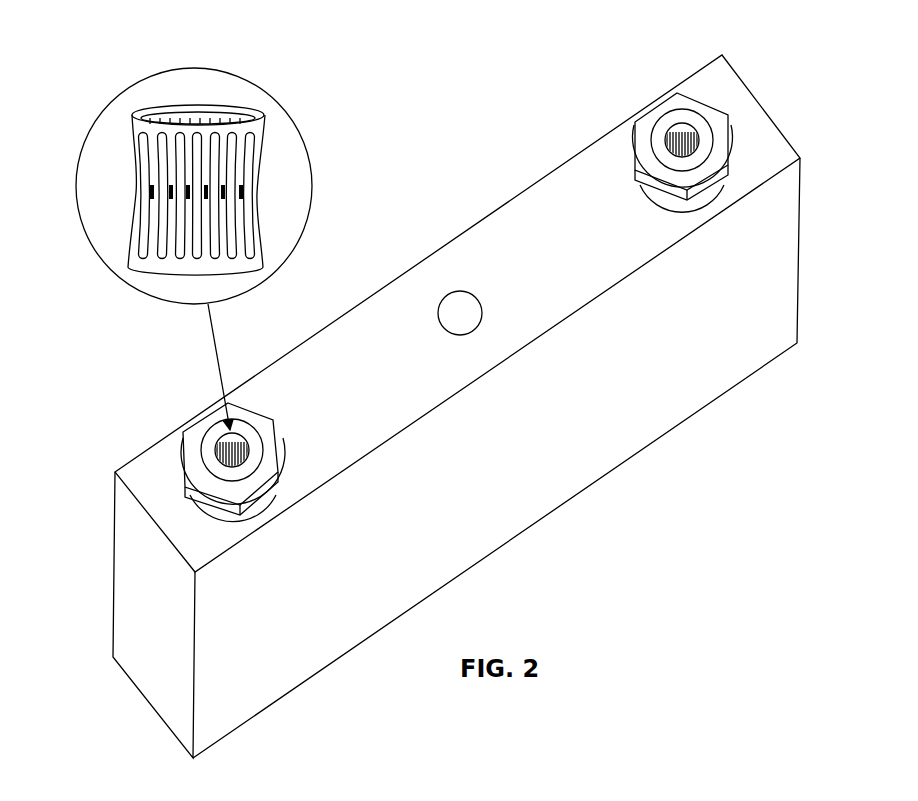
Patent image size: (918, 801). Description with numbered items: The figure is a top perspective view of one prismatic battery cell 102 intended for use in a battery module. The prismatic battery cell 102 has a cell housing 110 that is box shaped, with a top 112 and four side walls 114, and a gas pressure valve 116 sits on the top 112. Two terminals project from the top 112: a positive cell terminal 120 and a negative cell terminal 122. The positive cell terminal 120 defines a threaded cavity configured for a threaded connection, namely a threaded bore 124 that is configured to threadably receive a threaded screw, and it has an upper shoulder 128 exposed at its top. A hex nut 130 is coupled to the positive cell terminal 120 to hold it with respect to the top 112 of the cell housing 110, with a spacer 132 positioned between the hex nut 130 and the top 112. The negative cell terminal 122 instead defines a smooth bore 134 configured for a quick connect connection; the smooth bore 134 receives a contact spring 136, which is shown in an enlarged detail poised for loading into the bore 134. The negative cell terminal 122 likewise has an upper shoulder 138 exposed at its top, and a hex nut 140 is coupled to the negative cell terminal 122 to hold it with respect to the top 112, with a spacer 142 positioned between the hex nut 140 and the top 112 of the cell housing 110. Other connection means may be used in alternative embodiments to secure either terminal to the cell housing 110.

The prismatic battery cell 102 is at (396, 155).
The cell housing 110 is at (593, 466).
The top 112 is at (567, 180).
The side walls 114 is at (316, 657).
The gas pressure valve 116 is at (458, 312).
The positive cell terminal 120 is at (663, 116).
The negative cell terminal 122 is at (212, 428).
The threaded bore 124 is at (688, 116).
The upper shoulder 128 is at (712, 133).
The hex nut 130 is at (722, 146).
The spacer 132 is at (722, 190).
The smooth bore 134 is at (208, 450).
The contact spring 136 is at (143, 217).
The upper shoulder 138 is at (216, 467).
The hex nut 140 is at (217, 487).
The spacer 142 is at (217, 513).